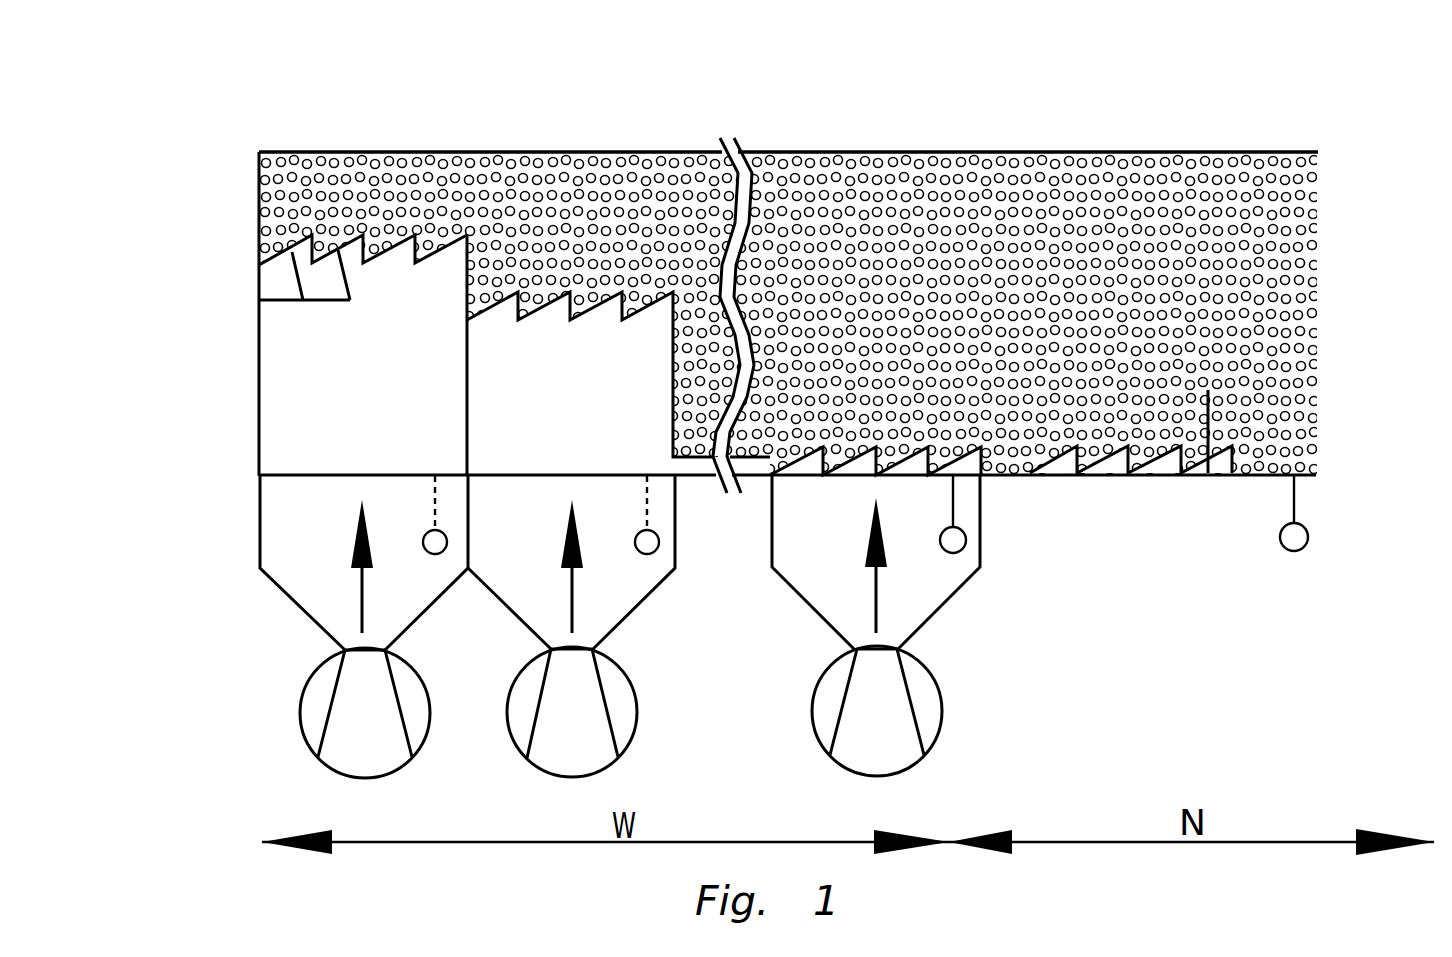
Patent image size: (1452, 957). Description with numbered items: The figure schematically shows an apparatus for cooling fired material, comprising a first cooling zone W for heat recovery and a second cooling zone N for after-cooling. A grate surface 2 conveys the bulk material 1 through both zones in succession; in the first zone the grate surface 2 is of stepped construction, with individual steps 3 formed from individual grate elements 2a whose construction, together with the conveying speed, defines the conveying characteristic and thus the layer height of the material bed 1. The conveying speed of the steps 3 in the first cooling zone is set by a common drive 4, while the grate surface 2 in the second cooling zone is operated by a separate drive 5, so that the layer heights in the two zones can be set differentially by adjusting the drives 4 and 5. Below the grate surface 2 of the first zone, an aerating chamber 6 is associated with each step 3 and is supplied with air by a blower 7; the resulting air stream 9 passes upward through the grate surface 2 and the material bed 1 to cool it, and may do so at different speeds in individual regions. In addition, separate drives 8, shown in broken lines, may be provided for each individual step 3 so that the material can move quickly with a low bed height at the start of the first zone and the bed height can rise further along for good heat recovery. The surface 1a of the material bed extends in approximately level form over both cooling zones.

The bulk material 1 is at (820, 215).
The surface of the material bed 1a is at (1048, 152).
The grate surface 2 is at (402, 237).
The grate element 2a is at (259, 300).
The step 3 is at (575, 355).
The common drive 4 is at (960, 548).
The separate drive 5 is at (1291, 550).
The aerating chamber 6 is at (303, 538).
The blower 7 is at (299, 698).
The separate drive 8 is at (445, 543).
The air stream 9 is at (570, 602).